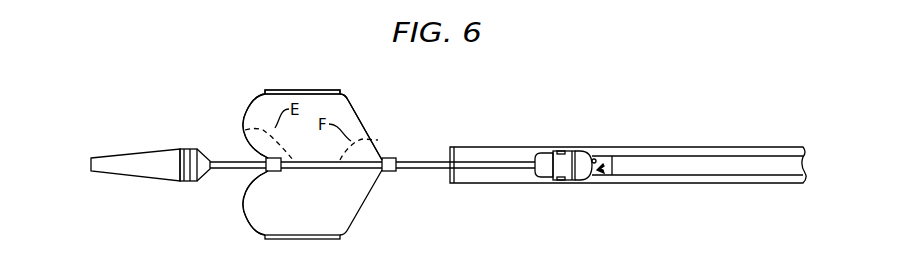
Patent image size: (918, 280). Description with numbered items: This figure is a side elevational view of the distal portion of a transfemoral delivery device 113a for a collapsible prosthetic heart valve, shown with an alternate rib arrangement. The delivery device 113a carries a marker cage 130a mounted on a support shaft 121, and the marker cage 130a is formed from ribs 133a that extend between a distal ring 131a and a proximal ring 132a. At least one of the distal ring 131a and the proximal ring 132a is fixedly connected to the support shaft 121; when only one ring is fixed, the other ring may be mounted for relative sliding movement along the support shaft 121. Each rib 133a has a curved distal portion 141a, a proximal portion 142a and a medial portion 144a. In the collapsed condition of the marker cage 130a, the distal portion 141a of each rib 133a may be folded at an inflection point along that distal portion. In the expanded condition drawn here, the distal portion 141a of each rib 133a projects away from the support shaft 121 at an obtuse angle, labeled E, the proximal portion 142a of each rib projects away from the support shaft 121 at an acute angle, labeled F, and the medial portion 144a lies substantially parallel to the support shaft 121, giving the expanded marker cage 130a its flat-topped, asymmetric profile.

The transfemoral delivery device 113a is at (163, 92).
The support shaft 121 is at (422, 160).
The marker cage 130a is at (372, 212).
The distal ring 131a is at (272, 172).
The proximal ring 132a is at (386, 157).
The rib 133a is at (244, 206).
The curved distal portion 141a is at (245, 120).
The proximal portion 142a is at (355, 104).
The medial portion 144a is at (280, 90).